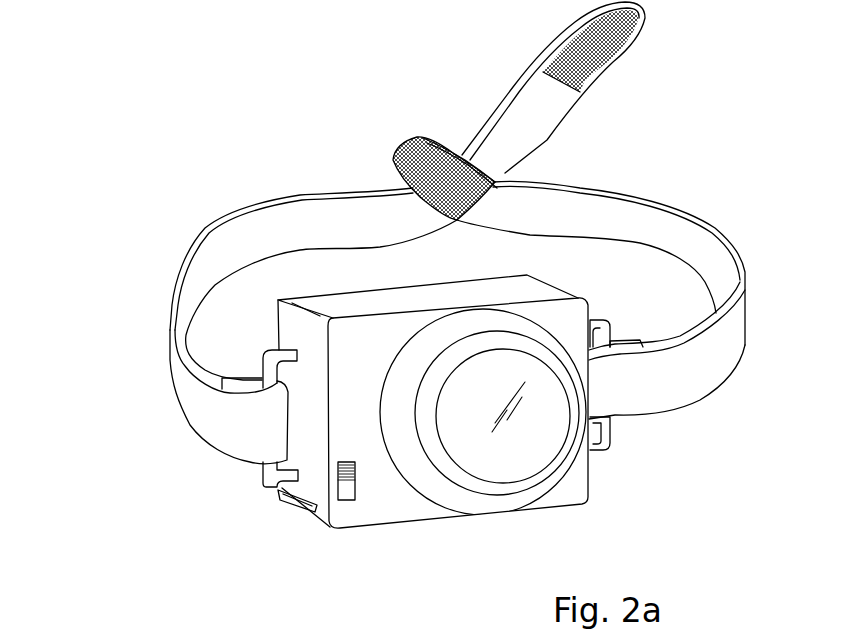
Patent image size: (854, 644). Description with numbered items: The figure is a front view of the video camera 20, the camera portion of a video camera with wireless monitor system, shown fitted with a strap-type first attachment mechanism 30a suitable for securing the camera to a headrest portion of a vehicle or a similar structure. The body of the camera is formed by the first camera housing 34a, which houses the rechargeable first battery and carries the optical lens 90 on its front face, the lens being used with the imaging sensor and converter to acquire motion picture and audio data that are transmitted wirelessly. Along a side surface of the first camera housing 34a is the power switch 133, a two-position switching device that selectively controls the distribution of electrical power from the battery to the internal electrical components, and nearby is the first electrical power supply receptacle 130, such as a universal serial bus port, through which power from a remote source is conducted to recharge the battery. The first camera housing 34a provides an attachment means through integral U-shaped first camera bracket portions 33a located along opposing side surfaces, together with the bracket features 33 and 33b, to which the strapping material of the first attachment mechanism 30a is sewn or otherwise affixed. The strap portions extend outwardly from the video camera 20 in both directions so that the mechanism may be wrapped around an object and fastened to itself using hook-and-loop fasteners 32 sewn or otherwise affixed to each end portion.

The video camera 20 is at (128, 180).
The first attachment mechanism 30a is at (717, 222).
The hook-and-loop fasteners 32 is at (463, 178).
The strap clip 33 is at (273, 363).
The first camera bracket 33a is at (265, 477).
The second camera bracket 33b is at (607, 443).
The first camera housing 34a is at (555, 502).
The optical lens 90 is at (502, 465).
The first electrical power supply receptacle 130 is at (290, 505).
The power switch 133 is at (357, 492).